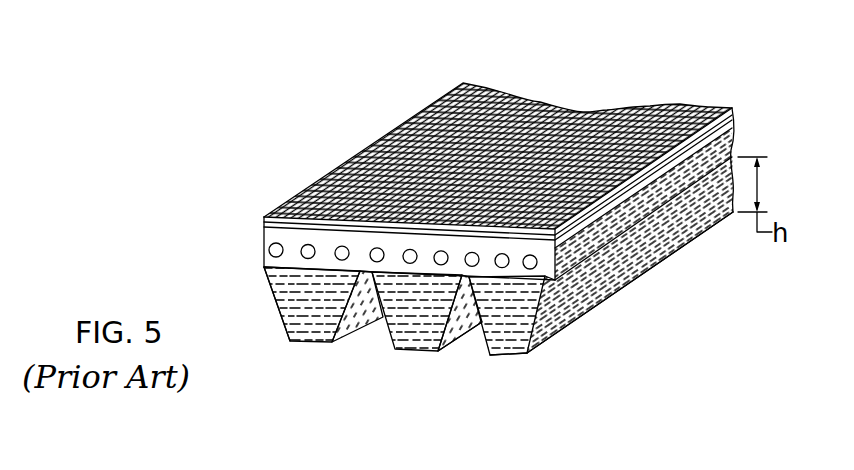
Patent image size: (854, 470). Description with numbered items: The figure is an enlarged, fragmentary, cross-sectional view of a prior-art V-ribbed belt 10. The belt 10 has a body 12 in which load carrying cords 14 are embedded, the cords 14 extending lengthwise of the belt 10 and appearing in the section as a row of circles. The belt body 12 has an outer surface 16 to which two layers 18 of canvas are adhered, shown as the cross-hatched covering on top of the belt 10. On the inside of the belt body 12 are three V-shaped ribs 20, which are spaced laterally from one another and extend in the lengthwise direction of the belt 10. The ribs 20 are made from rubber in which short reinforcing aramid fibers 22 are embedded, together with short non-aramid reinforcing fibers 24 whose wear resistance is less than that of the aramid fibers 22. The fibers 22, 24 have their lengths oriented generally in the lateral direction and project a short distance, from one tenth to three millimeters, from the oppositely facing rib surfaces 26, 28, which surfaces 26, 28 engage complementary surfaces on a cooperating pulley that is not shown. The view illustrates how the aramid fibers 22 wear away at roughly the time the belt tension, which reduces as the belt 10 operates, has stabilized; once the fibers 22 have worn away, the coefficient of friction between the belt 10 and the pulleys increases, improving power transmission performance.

The V-ribbed belt 10 is at (652, 40).
The belt body 12 is at (685, 228).
The load carrying cords 14 is at (270, 252).
The outer surface 16 is at (288, 225).
The layers of canvas 18 is at (263, 218).
The V-shaped ribs 20 is at (308, 345).
The aramid fibers 22 is at (361, 321).
The non-aramid reinforcing fibers 24 is at (293, 323).
The rib surface 26 is at (550, 320).
The rib surface 28 is at (483, 340).